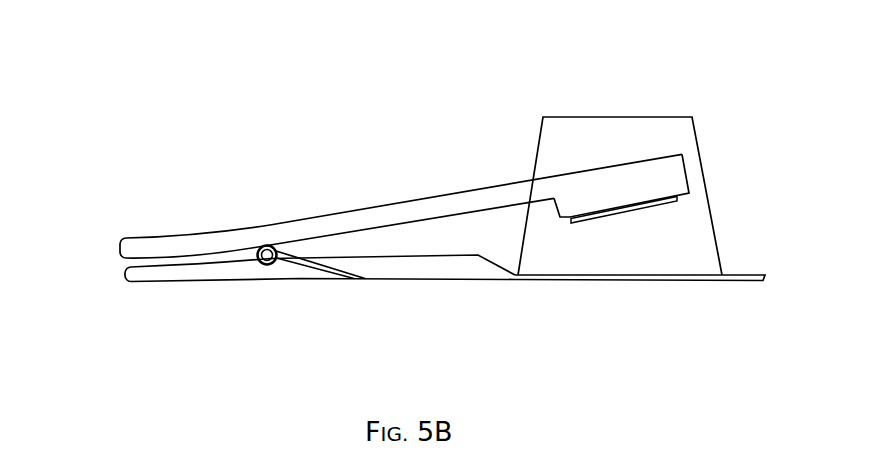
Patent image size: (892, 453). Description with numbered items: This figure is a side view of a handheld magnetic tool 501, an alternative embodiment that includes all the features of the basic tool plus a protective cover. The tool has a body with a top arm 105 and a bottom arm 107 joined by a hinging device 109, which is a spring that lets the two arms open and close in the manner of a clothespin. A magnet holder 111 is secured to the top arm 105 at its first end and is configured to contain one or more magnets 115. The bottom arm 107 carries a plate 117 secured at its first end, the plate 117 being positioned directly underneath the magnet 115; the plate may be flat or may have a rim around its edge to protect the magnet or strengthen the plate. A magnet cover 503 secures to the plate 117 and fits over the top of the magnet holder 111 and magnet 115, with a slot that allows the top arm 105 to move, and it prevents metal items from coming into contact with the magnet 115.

The handheld magnetic tool 501 is at (167, 162).
The top arm 105 is at (418, 200).
The bottom arm 107 is at (415, 278).
The hinging device 109 is at (320, 263).
The magnet holder 111 is at (587, 170).
The magnet 115 is at (653, 209).
The plate 117 is at (613, 281).
The magnet cover 503 is at (625, 117).